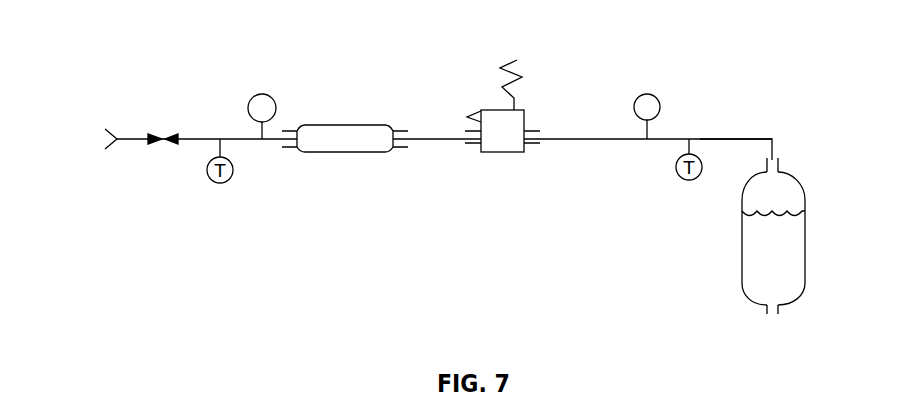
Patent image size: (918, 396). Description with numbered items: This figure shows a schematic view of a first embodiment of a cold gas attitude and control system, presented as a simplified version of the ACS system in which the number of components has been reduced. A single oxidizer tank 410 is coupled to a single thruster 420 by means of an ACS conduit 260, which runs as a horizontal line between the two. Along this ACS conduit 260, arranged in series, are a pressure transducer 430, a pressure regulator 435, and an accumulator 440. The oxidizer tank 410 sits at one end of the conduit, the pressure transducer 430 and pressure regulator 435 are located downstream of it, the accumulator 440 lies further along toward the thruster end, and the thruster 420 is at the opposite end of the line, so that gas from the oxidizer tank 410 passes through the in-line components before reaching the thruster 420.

The thruster 420 is at (161, 142).
The accumulator 440 is at (340, 125).
The pressure regulator 435 is at (527, 117).
The pressure transducer 430 is at (659, 100).
The ACS conduit 260 is at (735, 139).
The oxidizer tank 410 is at (793, 251).